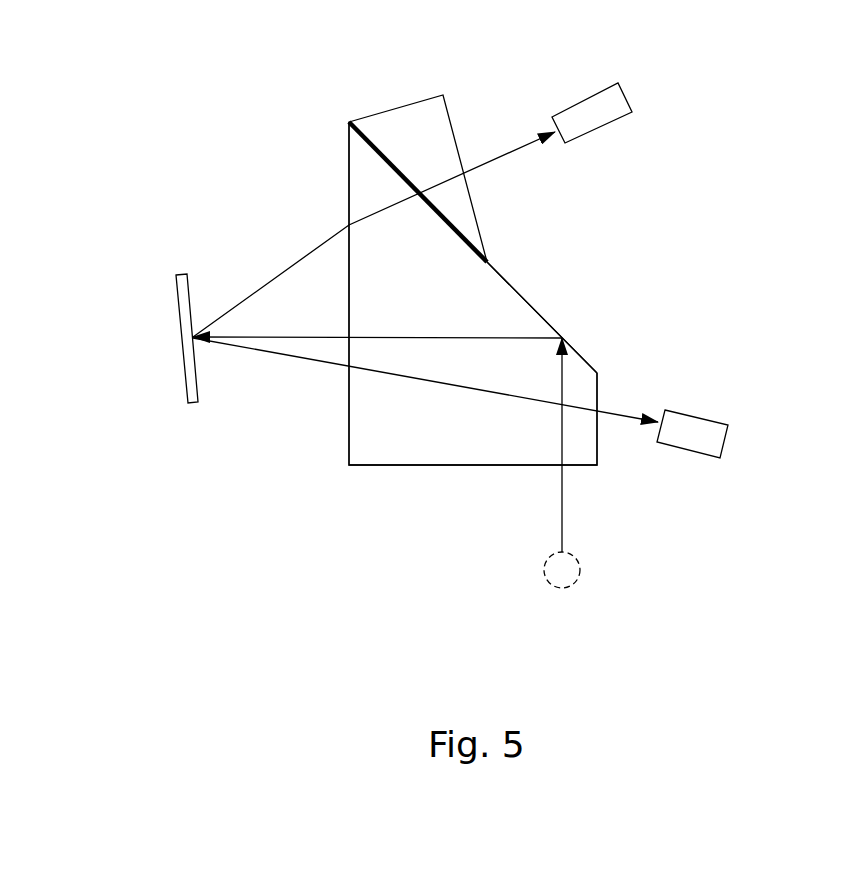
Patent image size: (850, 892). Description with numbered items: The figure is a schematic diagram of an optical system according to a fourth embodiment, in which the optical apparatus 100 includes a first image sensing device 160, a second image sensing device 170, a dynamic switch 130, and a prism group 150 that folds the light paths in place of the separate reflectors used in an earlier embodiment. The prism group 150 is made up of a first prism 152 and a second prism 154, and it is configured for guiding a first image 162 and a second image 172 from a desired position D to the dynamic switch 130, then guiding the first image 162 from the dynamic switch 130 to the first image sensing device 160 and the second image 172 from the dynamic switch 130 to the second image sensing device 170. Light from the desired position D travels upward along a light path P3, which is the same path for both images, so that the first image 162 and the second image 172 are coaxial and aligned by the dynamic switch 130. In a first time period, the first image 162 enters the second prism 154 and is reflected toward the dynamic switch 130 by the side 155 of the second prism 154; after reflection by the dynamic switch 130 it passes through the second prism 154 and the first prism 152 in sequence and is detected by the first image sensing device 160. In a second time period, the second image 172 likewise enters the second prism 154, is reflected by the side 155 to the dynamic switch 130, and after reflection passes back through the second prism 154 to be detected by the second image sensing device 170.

The optical apparatus 100 is at (62, 83).
The dynamic switch 130 is at (185, 310).
The prism group 150 is at (707, 222).
The first prism 152 is at (465, 213).
The second prism 154 is at (465, 276).
The side of the second prism 155 is at (565, 343).
The first image sensing device 160 is at (620, 110).
The first image 162 is at (514, 154).
The second image sensing device 170 is at (722, 432).
The second image 172 is at (634, 416).
The light path P3 is at (567, 493).
The desired position D is at (573, 568).